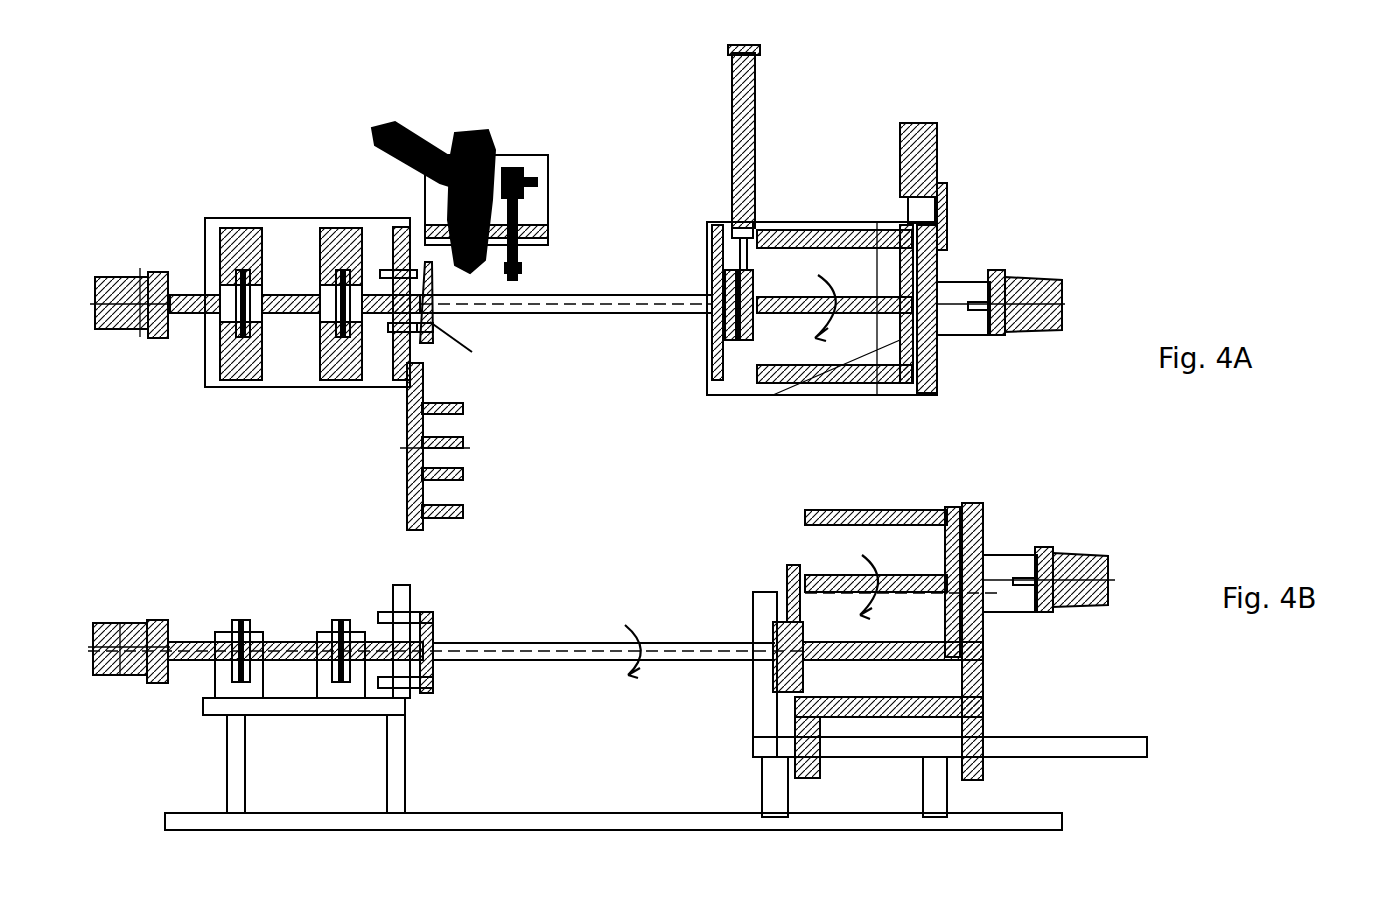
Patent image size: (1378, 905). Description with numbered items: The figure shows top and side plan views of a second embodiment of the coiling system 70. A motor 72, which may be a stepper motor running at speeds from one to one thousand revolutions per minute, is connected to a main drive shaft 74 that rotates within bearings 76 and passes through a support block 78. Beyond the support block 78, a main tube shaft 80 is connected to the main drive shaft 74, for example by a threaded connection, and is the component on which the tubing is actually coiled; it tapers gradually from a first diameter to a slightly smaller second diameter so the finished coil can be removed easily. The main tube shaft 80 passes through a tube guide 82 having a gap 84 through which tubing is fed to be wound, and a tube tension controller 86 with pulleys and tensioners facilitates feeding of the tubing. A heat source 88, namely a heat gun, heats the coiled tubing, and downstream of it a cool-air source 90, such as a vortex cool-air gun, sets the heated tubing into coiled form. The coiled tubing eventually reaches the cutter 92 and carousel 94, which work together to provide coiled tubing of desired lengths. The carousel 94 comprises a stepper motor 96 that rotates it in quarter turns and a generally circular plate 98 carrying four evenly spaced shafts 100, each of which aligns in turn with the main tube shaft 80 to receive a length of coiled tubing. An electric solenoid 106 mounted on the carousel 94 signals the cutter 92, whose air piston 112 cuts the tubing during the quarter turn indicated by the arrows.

In FIG. 4A, the coiling system 70 is at (206, 104).
In FIG. 4B, the coiling system 70 is at (161, 537).
In FIG. 4A, the motor 72 is at (140, 330).
In FIG. 4B, the motor 72 is at (120, 673).
In FIG. 4A, the main drive shaft 74 is at (290, 322).
In FIG. 4B, the main drive shaft 74 is at (190, 640).
In FIG. 4A, the bearings 76 is at (325, 272).
In FIG. 4B, the bearings 76 is at (330, 620).
In FIG. 4A, the support block 78 is at (393, 235).
In FIG. 4B, the support block 78 is at (393, 597).
In FIG. 4A, the main tube shaft 80 is at (548, 295).
In FIG. 4B, the main tube shaft 80 is at (545, 660).
In FIG. 4A, the tube guide 82 is at (423, 327).
In FIG. 4B, the tube guide 82 is at (427, 627).
In FIG. 4A, the gap 84 is at (420, 292).
In FIG. 4B, the gap 84 is at (405, 650).
In FIG. 4A, the tube tension controller 86 is at (407, 456).
In FIG. 4A, the heat source 88 is at (475, 125).
In FIG. 4A, the cool-air source 90 is at (530, 178).
In FIG. 4A, the cutter 92 is at (745, 345).
In FIG. 4B, the cutter 92 is at (787, 693).
In FIG. 4A, the carousel 94 is at (940, 262).
In FIG. 4B, the carousel 94 is at (973, 537).
In FIG. 4A, the stepper motor 96 is at (1062, 290).
In FIG. 4B, the stepper motor 96 is at (1108, 570).
In FIG. 4A, the plate 98 is at (900, 385).
In FIG. 4B, the plate 98 is at (947, 507).
In FIG. 4A, the shafts 100 is at (805, 228).
In FIG. 4B, the shafts 100 is at (805, 520).
In FIG. 4A, the electric solenoid 106 is at (940, 130).
In FIG. 4A, the air piston 112 is at (755, 145).